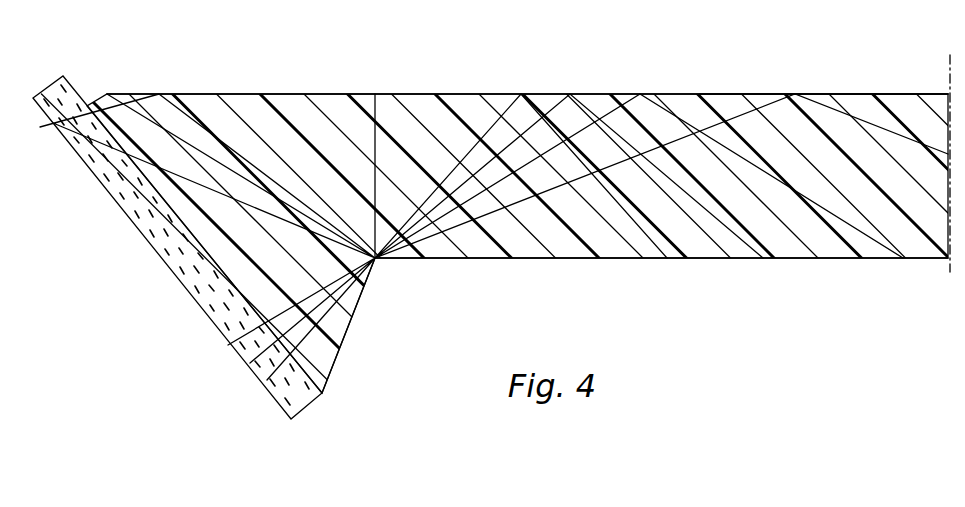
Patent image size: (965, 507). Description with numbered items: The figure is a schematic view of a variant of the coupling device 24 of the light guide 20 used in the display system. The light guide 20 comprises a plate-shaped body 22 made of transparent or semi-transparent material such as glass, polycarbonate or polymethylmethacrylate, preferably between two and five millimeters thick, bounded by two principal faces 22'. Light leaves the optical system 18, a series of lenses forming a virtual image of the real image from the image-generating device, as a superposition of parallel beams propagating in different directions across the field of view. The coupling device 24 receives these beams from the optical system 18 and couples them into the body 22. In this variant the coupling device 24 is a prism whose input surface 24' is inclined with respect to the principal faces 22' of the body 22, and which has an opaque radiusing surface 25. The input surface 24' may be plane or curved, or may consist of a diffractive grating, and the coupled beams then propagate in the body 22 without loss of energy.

The optical system 18 is at (92, 83).
The light guide 20 is at (656, 86).
The plate-shaped body 22 is at (527, 72).
The principal faces 22' is at (661, 179).
The coupling device 24 is at (230, 237).
The input surface 24' is at (534, 180).
The radiusing surface 25 is at (328, 318).